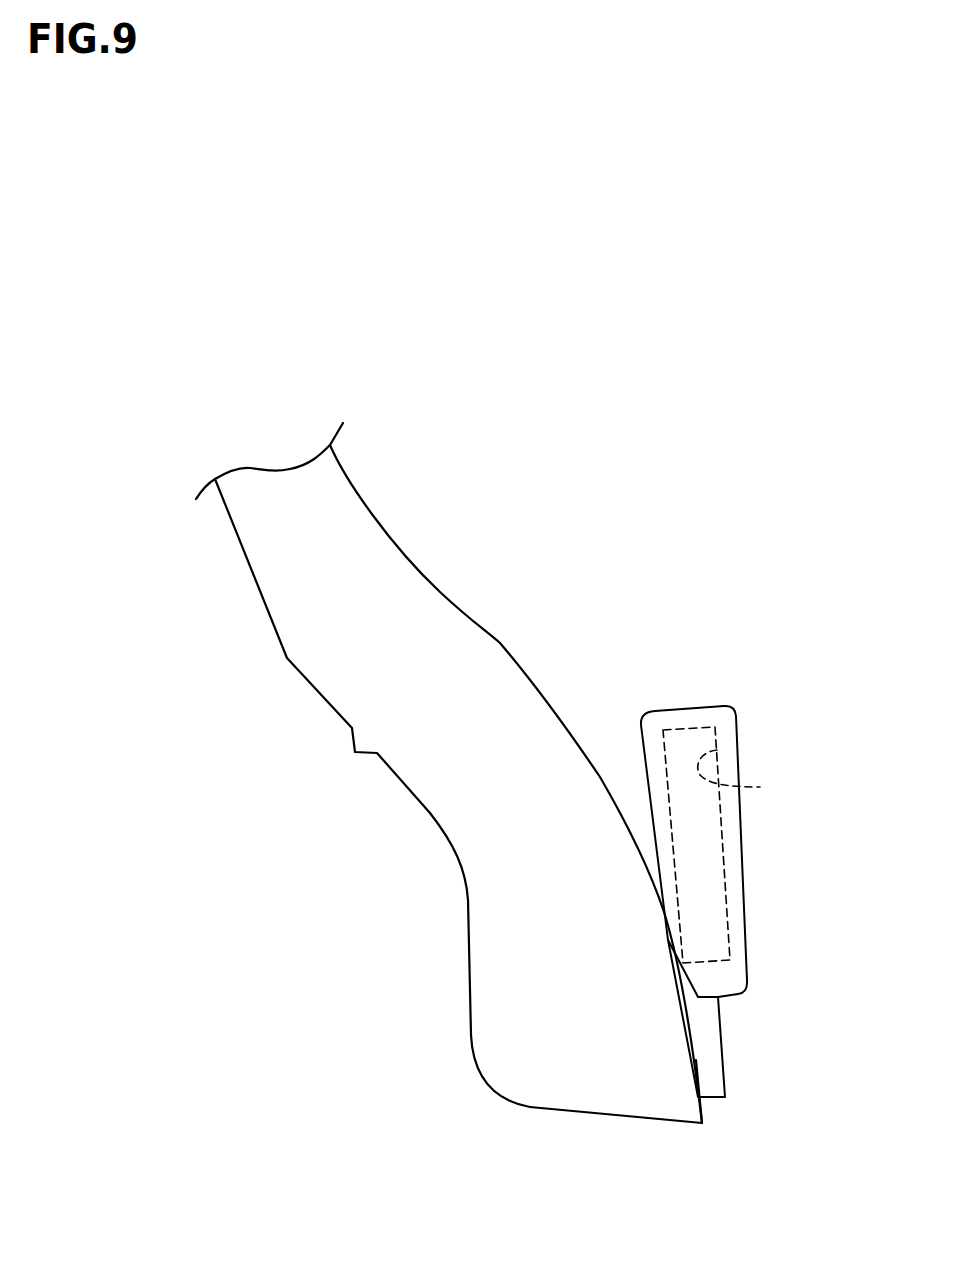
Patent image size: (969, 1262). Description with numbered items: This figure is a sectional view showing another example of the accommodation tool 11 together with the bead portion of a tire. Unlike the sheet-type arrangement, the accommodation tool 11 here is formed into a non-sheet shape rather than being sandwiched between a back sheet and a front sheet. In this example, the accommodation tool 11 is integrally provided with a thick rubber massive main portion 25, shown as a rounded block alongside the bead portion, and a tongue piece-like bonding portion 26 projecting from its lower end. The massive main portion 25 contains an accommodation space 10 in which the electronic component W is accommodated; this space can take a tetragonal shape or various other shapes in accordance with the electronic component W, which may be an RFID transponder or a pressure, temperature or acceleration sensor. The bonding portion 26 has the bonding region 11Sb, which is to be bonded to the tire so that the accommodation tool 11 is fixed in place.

The accommodation tool 11 is at (755, 677).
The bonding region 11Sb is at (692, 1065).
The massive main portion 25 is at (747, 892).
The bonding portion 26 is at (723, 1052).
The electronic component W is at (682, 728).
The accommodation space 10 is at (760, 787).